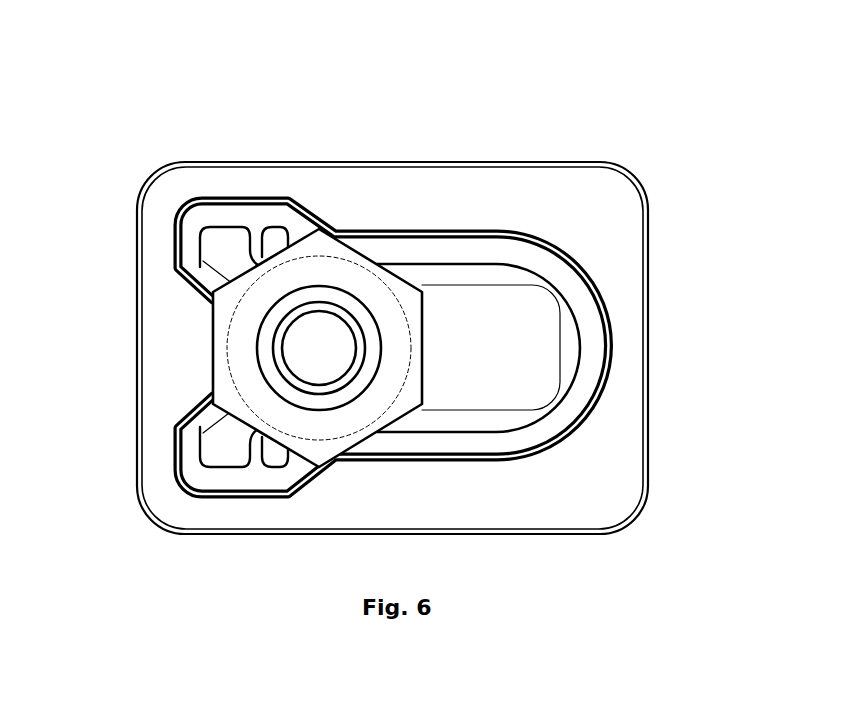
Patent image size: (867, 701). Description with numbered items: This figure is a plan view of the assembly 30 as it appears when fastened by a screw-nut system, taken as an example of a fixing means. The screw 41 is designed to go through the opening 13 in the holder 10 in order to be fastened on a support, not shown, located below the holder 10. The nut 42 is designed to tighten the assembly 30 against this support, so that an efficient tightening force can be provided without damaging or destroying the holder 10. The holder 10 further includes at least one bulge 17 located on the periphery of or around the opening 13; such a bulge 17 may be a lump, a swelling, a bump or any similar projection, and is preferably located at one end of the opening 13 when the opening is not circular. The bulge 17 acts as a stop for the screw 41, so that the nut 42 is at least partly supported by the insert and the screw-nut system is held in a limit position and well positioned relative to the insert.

The assembly 30 is at (582, 118).
The holder 10 is at (633, 323).
The opening 13 is at (503, 366).
The bulge 17 is at (236, 347).
The screw 41 is at (330, 333).
The nut 42 is at (412, 312).